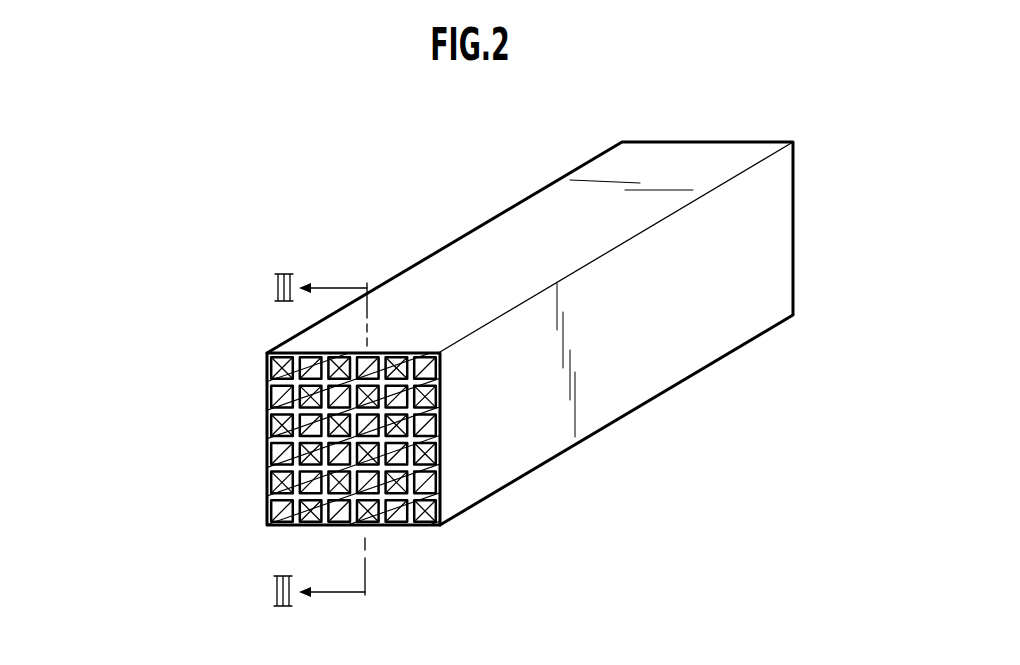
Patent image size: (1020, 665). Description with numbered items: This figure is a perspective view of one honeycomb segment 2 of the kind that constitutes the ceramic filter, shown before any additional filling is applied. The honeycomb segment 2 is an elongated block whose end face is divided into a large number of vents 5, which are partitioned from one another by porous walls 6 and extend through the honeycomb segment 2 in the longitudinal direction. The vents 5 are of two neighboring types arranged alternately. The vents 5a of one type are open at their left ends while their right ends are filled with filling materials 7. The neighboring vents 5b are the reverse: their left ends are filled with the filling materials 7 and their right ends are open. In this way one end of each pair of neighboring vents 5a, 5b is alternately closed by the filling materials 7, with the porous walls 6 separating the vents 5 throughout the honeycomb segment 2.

The honeycomb segment 2 is at (372, 255).
The vents 5 is at (110, 313).
The vents of one type 5a is at (272, 410).
The neighboring vents 5b is at (272, 360).
The filling materials 7 is at (303, 448).
The porous walls 6 is at (413, 524).